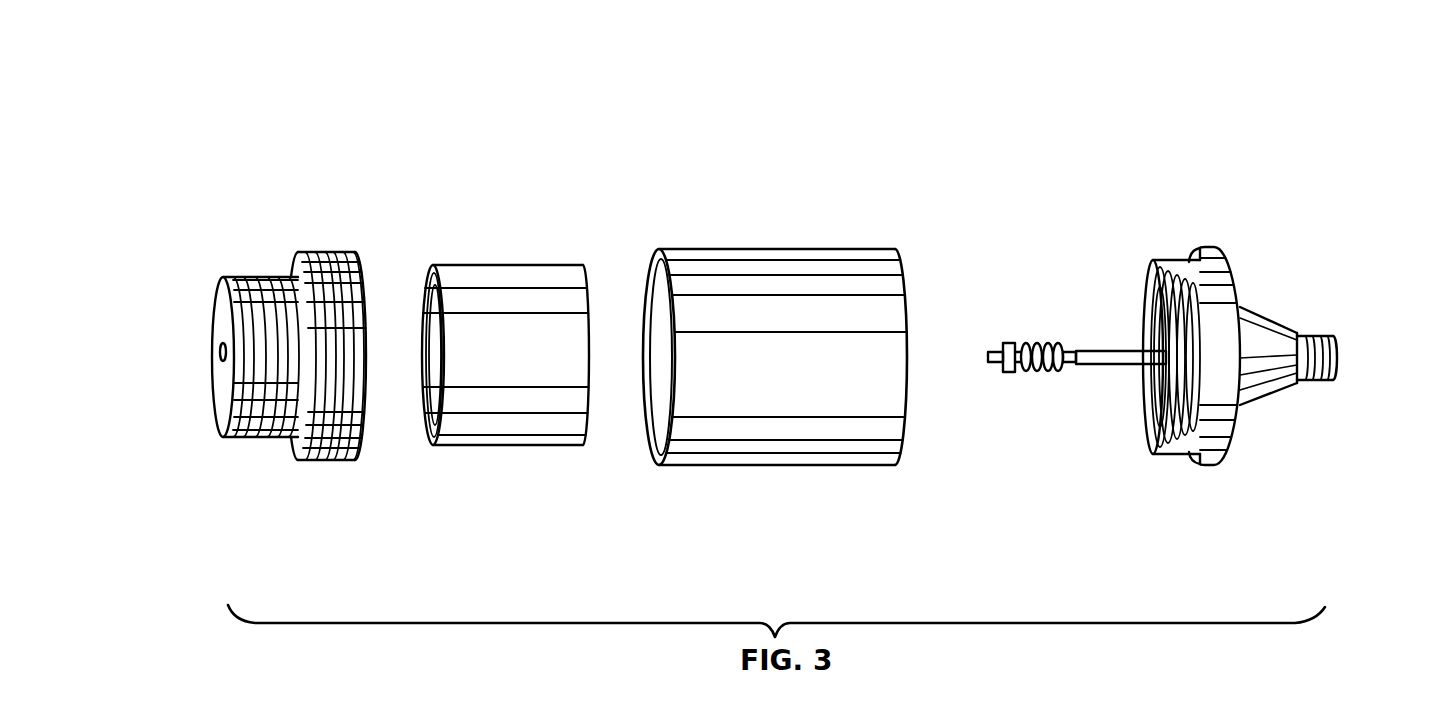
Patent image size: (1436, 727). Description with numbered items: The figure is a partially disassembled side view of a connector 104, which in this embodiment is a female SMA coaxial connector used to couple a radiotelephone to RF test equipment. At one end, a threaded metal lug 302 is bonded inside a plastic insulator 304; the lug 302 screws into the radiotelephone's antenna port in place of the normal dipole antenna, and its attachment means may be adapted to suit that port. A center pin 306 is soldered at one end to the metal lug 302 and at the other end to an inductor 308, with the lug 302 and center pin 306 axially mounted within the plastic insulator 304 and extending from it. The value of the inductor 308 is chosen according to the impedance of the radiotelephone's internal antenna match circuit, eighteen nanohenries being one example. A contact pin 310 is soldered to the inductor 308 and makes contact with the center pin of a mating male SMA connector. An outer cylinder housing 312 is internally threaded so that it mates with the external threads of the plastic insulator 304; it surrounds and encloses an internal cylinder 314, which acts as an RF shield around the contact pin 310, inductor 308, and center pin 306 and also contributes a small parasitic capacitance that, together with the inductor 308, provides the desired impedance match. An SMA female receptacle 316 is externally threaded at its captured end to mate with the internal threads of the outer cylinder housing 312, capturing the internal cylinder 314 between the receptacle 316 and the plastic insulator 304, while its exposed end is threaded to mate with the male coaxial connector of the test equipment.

The connector 104 is at (390, 152).
The threaded metal lug 302 is at (1322, 335).
The plastic insulator 304 is at (1240, 445).
The center pin 306 is at (1110, 350).
The inductor 308 is at (1047, 378).
The contact pin 310 is at (1003, 348).
The outer cylinder housing 312 is at (738, 450).
The internal cylinder 314 is at (500, 440).
The SMA female receptacle 316 is at (305, 460).